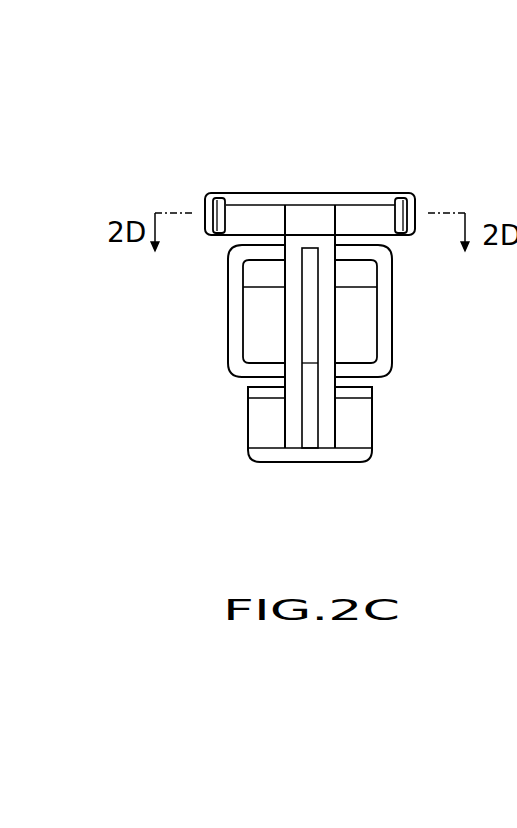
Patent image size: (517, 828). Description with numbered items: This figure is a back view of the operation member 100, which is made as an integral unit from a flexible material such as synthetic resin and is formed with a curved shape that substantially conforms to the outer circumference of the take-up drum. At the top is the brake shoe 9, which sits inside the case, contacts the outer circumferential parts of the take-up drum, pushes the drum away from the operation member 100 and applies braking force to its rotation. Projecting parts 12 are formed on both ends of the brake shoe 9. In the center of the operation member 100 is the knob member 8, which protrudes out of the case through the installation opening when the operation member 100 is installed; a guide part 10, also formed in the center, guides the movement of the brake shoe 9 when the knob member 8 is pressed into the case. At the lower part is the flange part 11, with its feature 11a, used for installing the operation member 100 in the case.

The operation member 100 is at (283, 116).
The brake shoe 9 is at (312, 193).
The projecting parts 12 is at (220, 200).
The knob member 8 is at (387, 317).
The guide part 10 is at (292, 312).
The flange part 11 is at (262, 420).
The groove of bottom block 11a is at (392, 395).